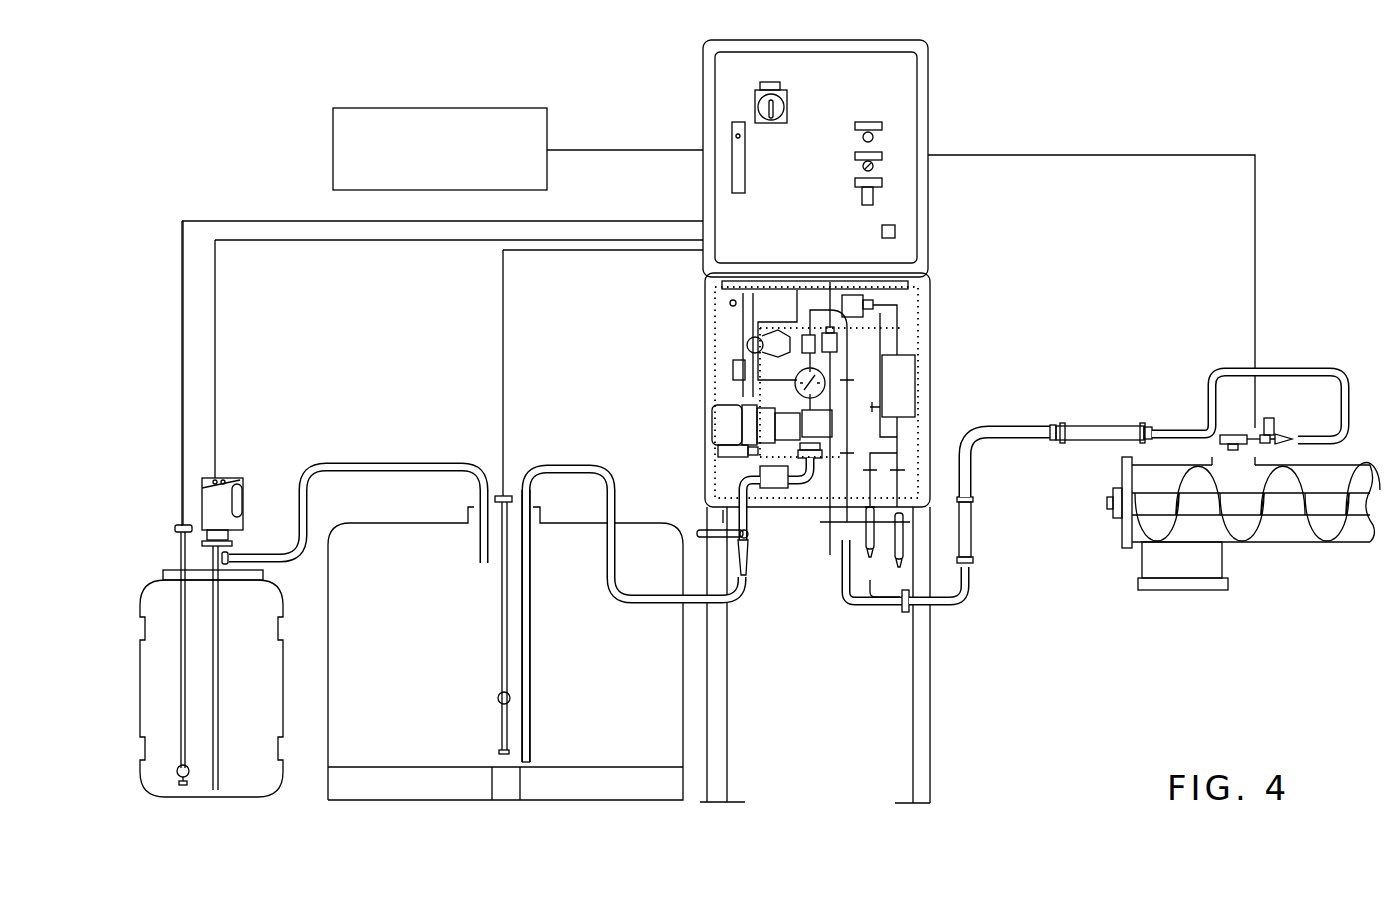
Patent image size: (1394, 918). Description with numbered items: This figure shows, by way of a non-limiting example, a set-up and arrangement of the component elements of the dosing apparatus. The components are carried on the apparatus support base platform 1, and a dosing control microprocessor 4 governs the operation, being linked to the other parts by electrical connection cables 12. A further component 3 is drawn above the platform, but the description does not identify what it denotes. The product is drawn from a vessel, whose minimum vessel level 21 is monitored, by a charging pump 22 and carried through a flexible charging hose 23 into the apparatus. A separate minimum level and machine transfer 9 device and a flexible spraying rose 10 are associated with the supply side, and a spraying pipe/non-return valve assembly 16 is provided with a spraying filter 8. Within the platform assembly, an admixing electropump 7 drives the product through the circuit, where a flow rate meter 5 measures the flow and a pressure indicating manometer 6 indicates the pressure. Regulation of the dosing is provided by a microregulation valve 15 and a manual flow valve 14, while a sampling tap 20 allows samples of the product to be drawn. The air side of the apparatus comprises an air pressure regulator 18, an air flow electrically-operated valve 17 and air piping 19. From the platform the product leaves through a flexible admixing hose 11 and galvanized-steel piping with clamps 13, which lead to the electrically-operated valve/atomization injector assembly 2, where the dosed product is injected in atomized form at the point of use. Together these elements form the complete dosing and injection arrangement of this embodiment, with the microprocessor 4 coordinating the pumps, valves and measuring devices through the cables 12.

The apparatus support base platform 1 is at (732, 325).
The electrically-operated valve/atomization injector assembly 2 is at (1240, 430).
The controller 3 is at (732, 68).
The dosing control microprocessor 4 is at (474, 128).
The flow rate meter 5 is at (853, 306).
The pressure indicating manometer 6 is at (796, 397).
The admixing electropump 7 is at (795, 425).
The spraying filter 8 is at (745, 487).
The minimum level and machine transfer 9 is at (500, 672).
The flexible spraying rose 10 is at (600, 466).
The flexible admixing hose 11 is at (990, 424).
The electrical connection cables 12 is at (976, 152).
The galvanized-steel piping/clamps 13 is at (1092, 432).
The manual flow valve 14 is at (755, 537).
The microregulation valve 15 is at (903, 377).
The spraying pipe/non-return valve assembly 16 is at (532, 672).
The air flow electrically-operated valve 17 is at (732, 370).
The air pressure regulator 18 is at (760, 332).
The air piping 19 is at (857, 612).
The sampling tap 20 is at (935, 600).
The minimum vessel level 21 is at (178, 528).
The charging pump 22 is at (217, 505).
The flexible charging hose 23 is at (402, 462).